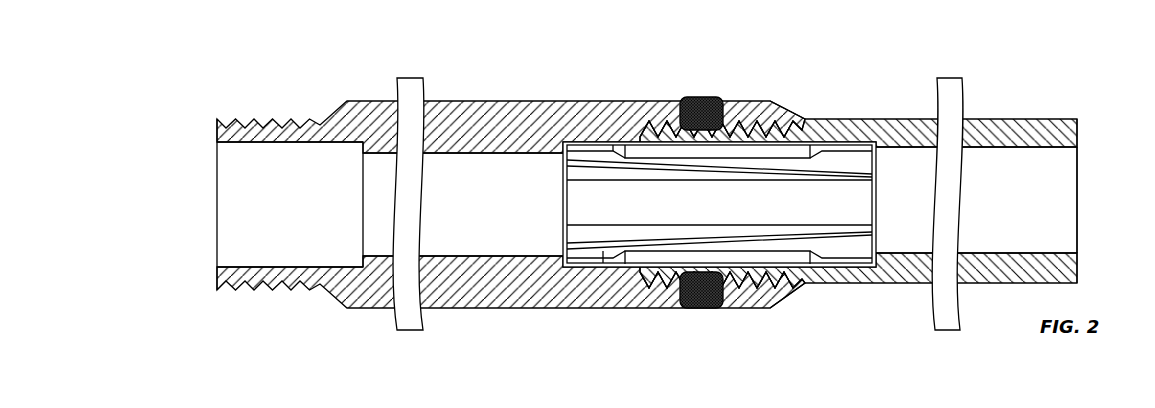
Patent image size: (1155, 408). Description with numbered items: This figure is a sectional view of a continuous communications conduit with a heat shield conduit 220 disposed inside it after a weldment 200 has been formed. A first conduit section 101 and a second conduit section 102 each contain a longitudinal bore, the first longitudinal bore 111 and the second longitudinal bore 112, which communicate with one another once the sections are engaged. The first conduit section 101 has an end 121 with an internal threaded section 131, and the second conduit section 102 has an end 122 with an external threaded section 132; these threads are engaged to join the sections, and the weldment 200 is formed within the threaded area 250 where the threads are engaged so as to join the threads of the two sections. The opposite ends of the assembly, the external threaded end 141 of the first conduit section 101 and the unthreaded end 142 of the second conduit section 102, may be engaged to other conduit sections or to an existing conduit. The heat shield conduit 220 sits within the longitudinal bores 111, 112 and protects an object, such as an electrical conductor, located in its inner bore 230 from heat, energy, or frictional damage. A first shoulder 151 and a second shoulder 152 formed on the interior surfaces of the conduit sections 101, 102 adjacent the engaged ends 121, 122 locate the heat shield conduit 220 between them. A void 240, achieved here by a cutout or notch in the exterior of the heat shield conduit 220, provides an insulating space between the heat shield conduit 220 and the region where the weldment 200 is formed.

The first conduit section 101 is at (482, 300).
The second conduit section 102 is at (860, 283).
The first longitudinal bore 111 is at (479, 214).
The second longitudinal bore 112 is at (1024, 209).
The end of first conduit section 121 is at (790, 118).
The end of second conduit section 122 is at (622, 145).
The internal threaded section 131 is at (790, 123).
The external threaded section 132 is at (770, 292).
The external threaded end 141 is at (217, 215).
The unthreaded end 142 is at (1077, 207).
The first shoulder 151 is at (566, 258).
The second shoulder 152 is at (868, 254).
The weldment 200 is at (700, 100).
The heat shield conduit 220 is at (601, 266).
The inner bore 230 is at (739, 214).
The void 240 is at (635, 147).
The threaded area 250 is at (807, 62).